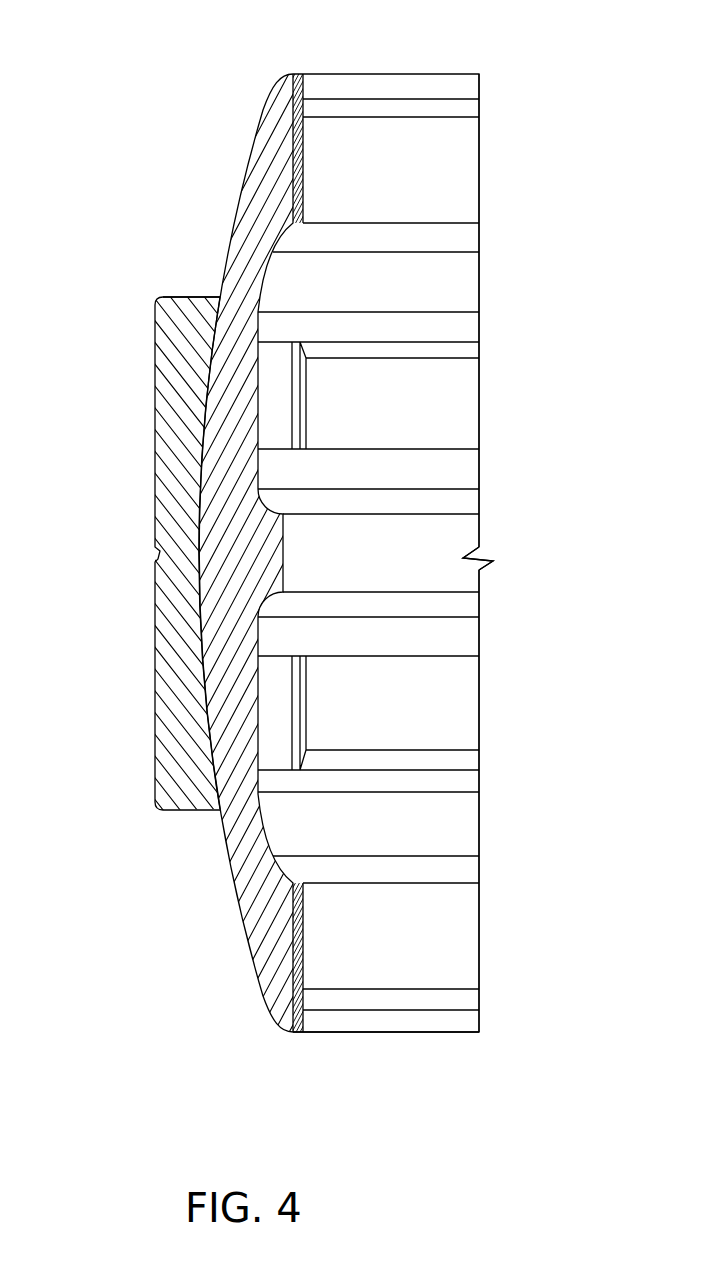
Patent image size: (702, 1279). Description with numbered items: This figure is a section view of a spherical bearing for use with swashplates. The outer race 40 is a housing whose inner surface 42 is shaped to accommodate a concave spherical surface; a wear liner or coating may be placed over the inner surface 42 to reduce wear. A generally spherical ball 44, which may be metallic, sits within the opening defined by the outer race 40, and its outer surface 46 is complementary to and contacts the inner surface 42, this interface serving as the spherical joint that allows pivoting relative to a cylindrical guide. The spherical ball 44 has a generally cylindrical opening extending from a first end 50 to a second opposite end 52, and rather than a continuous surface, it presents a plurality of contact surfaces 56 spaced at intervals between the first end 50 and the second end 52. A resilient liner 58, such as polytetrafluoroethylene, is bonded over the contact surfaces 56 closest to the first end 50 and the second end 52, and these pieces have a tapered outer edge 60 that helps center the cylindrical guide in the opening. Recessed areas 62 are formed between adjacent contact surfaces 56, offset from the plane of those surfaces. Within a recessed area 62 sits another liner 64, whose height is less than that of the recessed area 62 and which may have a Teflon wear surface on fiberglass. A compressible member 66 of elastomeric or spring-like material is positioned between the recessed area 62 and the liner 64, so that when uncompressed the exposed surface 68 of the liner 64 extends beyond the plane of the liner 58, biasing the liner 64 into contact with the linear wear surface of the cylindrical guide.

The outer race 40 is at (155, 430).
The inner surface 42 is at (200, 693).
The spherical ball 44 is at (227, 533).
The outer surface 46 is at (220, 290).
The first end 50 is at (442, 73).
The second end 52 is at (418, 1032).
The contact surfaces 56 is at (293, 143).
The liner 58 is at (465, 160).
The tapered outer edge 60 is at (368, 88).
The recessed areas 62 is at (467, 475).
The liner 64 is at (460, 377).
The compressible member 66 is at (298, 392).
The exposed surface 68 is at (479, 416).